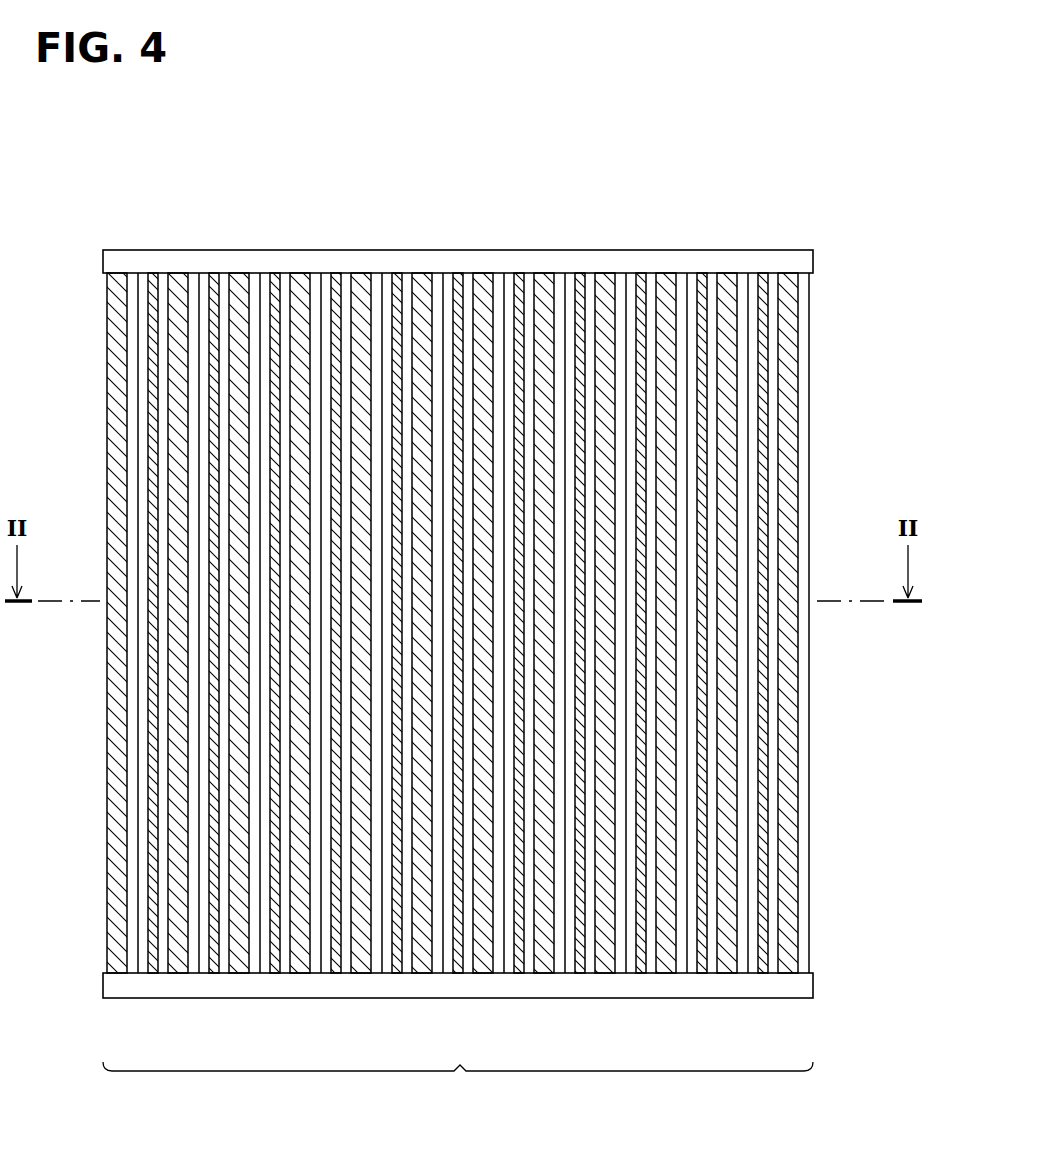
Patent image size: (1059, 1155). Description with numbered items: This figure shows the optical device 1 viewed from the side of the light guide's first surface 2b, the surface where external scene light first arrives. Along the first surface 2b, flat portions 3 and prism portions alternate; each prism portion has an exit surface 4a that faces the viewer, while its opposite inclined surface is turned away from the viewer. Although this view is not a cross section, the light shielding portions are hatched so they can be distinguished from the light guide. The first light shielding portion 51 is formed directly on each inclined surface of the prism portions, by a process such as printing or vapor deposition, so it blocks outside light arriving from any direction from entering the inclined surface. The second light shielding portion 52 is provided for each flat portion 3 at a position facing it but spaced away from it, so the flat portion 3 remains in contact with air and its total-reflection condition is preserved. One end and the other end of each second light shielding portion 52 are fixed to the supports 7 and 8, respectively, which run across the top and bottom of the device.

The optical device 1 is at (733, 113).
The first surface 2b is at (458, 1082).
The flat portion 3 is at (205, 948).
The exit surface 4a is at (133, 948).
The support 7 is at (175, 262).
The support 8 is at (109, 986).
The first light shielding portion 51 is at (237, 290).
The second light shielding portion 52 is at (275, 290).